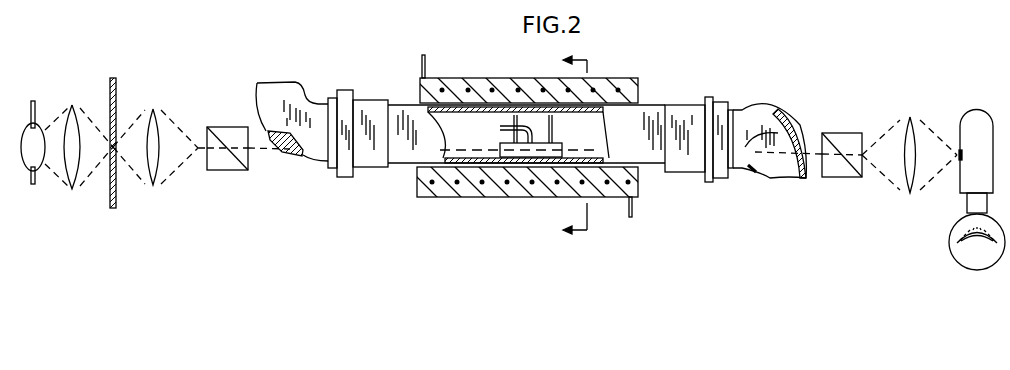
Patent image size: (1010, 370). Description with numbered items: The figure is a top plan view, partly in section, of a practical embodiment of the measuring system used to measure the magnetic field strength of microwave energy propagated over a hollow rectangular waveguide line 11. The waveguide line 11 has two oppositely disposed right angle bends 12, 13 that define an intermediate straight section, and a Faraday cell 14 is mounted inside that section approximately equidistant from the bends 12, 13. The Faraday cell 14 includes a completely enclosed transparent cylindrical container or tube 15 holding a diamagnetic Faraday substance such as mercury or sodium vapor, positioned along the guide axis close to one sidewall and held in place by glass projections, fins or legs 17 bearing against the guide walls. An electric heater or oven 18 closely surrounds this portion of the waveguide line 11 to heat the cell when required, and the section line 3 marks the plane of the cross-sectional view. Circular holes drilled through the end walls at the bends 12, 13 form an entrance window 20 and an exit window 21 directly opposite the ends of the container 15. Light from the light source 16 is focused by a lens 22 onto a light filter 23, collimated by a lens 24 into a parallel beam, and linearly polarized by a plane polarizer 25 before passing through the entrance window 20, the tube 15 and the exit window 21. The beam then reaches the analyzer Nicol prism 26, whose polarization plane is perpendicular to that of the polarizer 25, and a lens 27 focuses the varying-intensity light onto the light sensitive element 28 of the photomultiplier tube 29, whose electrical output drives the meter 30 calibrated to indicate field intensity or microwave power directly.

The section line 3- 3 is at (566, 146).
The hollow pipe waveguide line 11 is at (413, 152).
The right angle bend 12 is at (300, 82).
The right angle bend 13 is at (745, 145).
The Faraday cell 14 is at (493, 141).
The transparent hollow container or tube 15 is at (561, 147).
The light source 16 is at (23, 139).
The glass projections, fins or legs 17 is at (553, 128).
The electric heater or oven 18 is at (638, 80).
The entrance window 20 is at (284, 152).
The exit window 21 is at (805, 152).
The lens 22 is at (80, 118).
The light filter 23 is at (117, 94).
The lens 24 is at (163, 118).
The plane polarizer 25 is at (227, 127).
The analyzer Nicol prism 26 is at (850, 133).
The lens 27 is at (915, 121).
The light sensitive element 28 is at (958, 160).
The photomultiplier tube 29 is at (977, 110).
The meter 30 is at (950, 241).